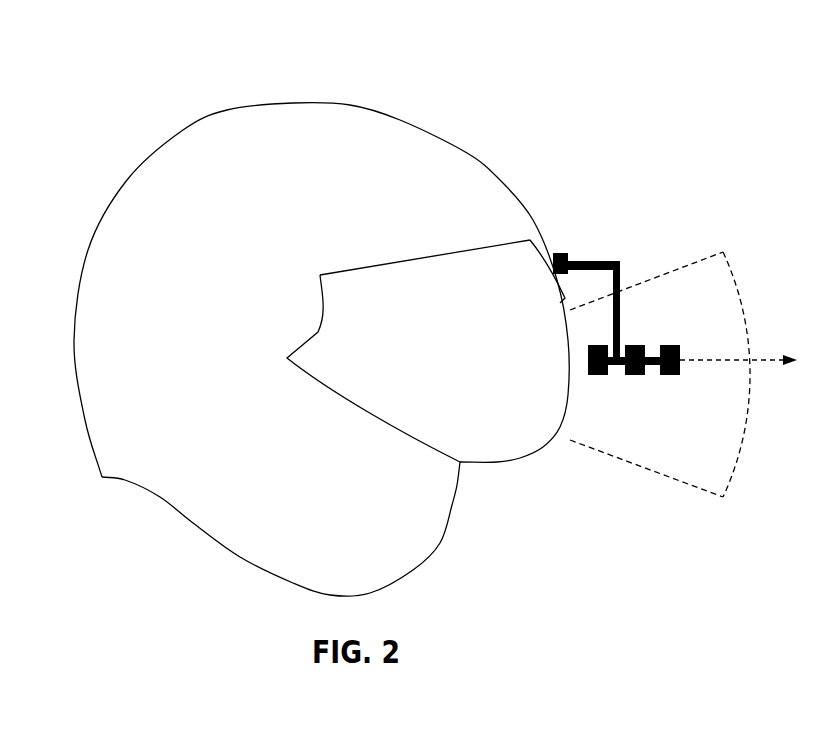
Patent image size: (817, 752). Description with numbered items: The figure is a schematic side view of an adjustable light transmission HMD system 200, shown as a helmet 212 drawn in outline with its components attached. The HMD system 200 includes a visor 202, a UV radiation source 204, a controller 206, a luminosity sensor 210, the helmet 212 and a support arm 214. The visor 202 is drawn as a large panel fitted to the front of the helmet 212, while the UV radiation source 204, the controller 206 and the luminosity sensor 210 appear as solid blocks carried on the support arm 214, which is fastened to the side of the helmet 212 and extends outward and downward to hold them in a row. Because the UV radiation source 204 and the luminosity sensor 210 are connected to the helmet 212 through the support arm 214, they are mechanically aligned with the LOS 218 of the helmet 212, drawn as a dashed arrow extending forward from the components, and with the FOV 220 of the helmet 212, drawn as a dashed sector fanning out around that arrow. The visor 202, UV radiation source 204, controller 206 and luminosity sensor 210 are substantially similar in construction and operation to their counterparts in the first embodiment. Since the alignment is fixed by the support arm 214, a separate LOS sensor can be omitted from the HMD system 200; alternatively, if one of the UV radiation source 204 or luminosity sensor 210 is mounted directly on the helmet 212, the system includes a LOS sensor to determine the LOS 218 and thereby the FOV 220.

The adjustable light transmission HMD system 200 is at (302, 72).
The visor 202 is at (538, 453).
The UV radiation source 204 is at (598, 376).
The controller 206 is at (638, 376).
The luminosity sensor 210 is at (673, 347).
The helmet 212 is at (197, 525).
The support arm 214 is at (600, 258).
The LOS 218 is at (765, 355).
The FOV 220 is at (675, 480).